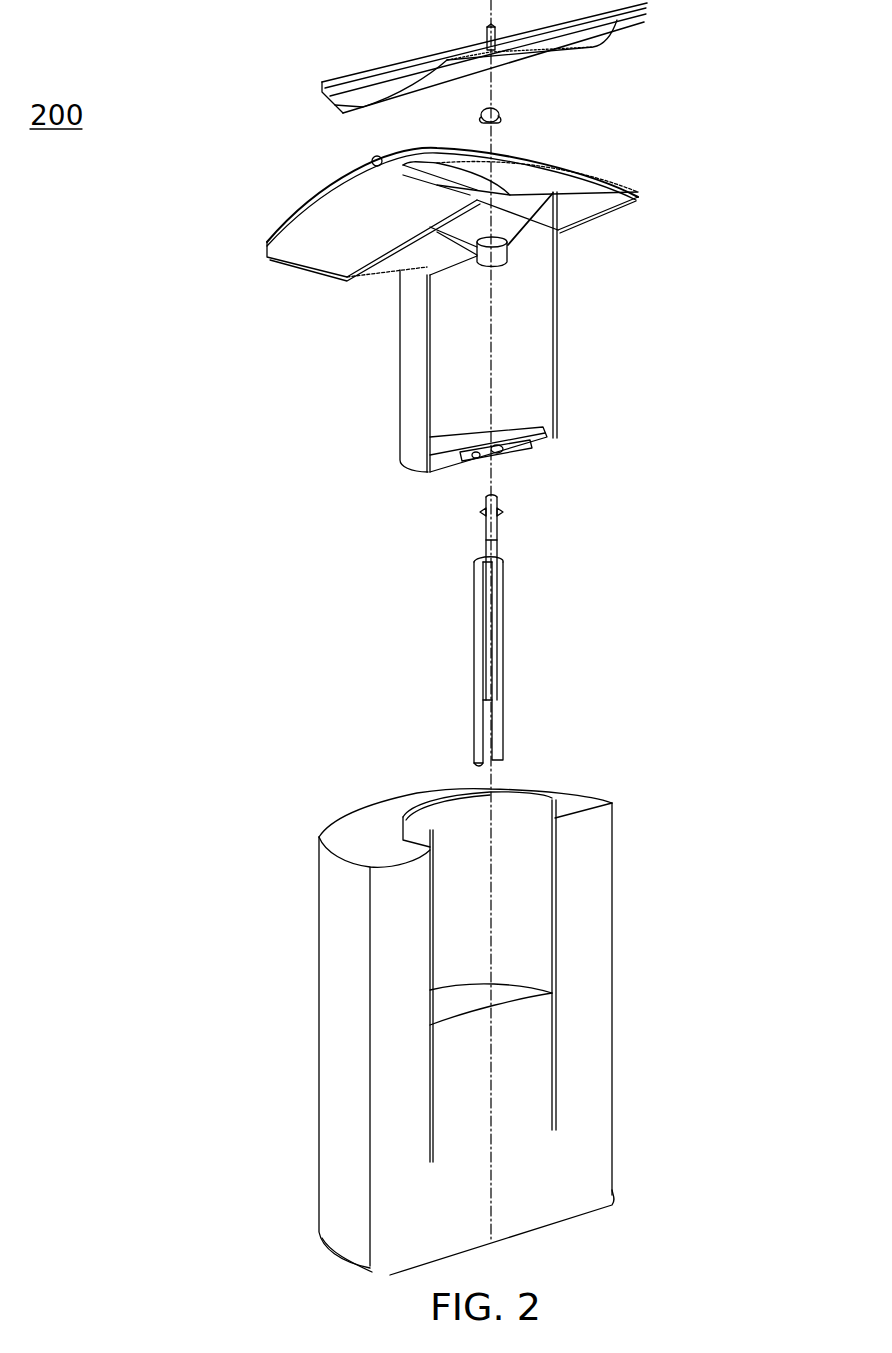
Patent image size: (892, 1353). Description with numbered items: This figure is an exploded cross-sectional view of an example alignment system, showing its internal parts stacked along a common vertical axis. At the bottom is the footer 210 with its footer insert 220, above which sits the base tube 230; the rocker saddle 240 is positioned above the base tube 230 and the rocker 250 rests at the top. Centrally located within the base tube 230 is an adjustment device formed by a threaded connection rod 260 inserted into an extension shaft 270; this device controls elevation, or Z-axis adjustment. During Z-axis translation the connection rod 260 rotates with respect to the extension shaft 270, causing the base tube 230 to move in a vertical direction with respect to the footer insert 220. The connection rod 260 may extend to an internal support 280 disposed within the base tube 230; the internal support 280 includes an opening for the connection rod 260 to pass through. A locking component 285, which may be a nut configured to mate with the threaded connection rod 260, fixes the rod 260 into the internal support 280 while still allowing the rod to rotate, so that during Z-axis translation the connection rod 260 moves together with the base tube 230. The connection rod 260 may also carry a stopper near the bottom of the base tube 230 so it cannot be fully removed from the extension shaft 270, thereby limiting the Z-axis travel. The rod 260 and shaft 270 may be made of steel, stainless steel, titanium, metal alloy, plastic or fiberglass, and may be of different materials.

The footer 210 is at (330, 900).
The footer insert 220 is at (405, 806).
The base tube 230 is at (413, 418).
The rocker saddle 240 is at (553, 190).
The rocker 250 is at (645, 13).
The threaded rod 260 is at (487, 540).
The extension shaft 270 is at (500, 728).
The internal support 280 is at (490, 265).
The locking component 285 is at (503, 107).